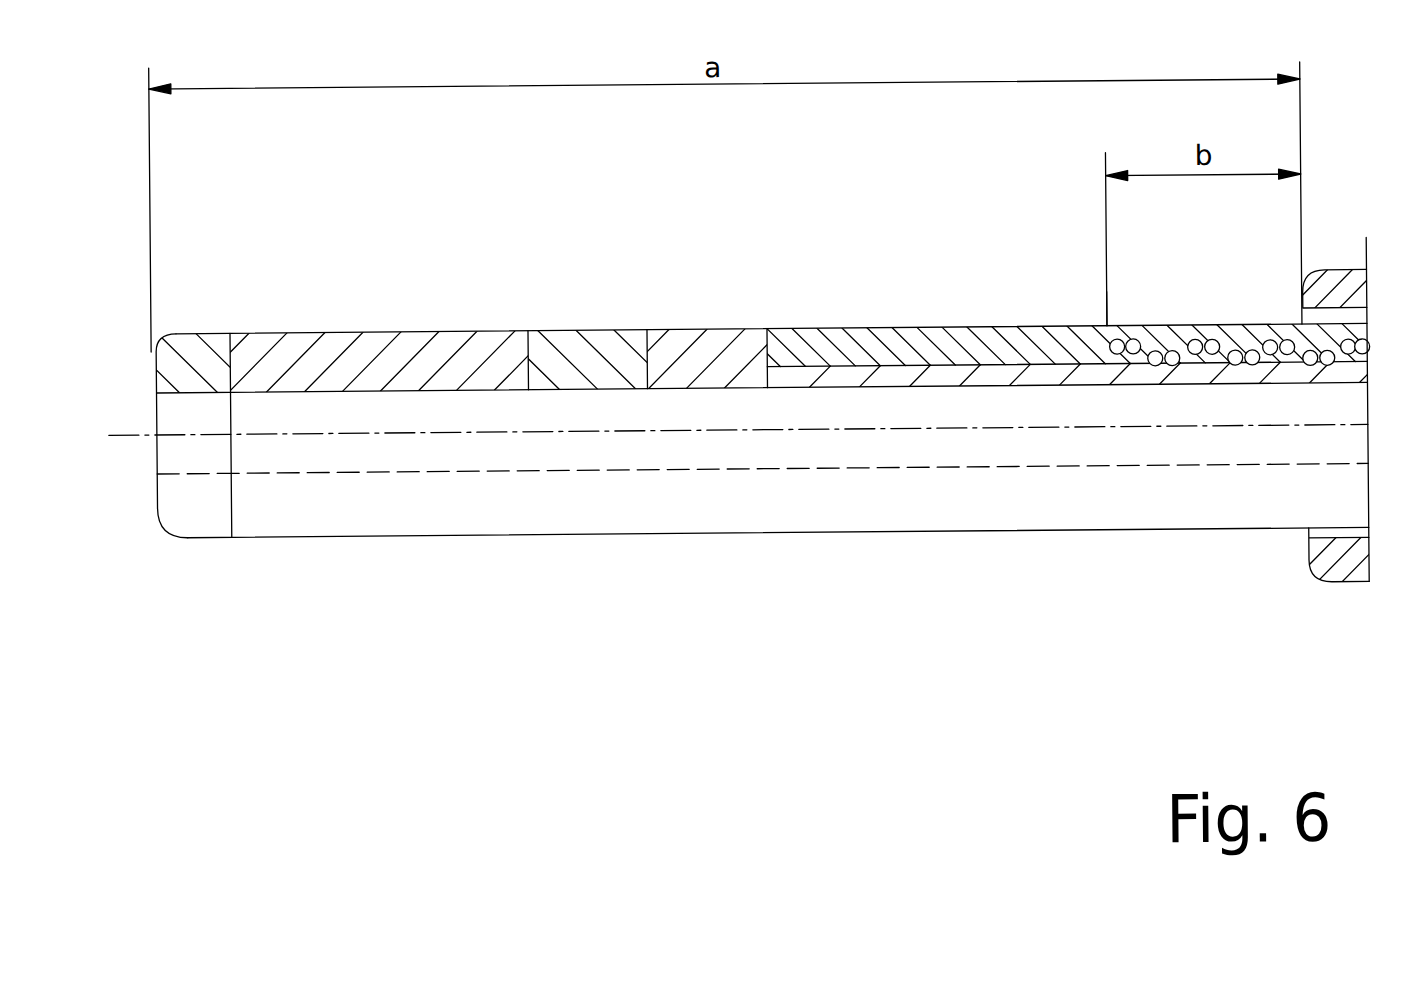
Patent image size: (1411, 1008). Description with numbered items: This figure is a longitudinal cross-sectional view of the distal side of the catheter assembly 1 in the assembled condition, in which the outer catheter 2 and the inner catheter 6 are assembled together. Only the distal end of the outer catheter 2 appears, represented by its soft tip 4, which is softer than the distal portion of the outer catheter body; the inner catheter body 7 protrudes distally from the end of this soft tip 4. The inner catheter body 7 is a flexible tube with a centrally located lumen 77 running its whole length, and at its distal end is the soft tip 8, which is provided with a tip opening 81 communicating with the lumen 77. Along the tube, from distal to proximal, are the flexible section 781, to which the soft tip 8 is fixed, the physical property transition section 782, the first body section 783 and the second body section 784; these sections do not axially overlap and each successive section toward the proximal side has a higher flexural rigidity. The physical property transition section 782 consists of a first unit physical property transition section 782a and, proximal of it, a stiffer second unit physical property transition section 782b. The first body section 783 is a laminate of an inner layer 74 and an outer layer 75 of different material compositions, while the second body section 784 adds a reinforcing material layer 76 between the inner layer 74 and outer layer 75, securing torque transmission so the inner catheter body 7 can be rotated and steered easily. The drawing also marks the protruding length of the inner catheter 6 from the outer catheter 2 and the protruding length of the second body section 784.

The catheter assembly 1 is at (936, 676).
The outer catheter 2 is at (1353, 619).
The soft tip 4 is at (1322, 580).
The inner catheter 6 is at (1078, 581).
The inner catheter body 7 is at (1133, 550).
The soft tip 8 is at (192, 362).
The tip opening 81 is at (173, 417).
The inner layer 74 is at (1035, 385).
The outer layer 75 is at (985, 352).
The reinforcing material layer 76 is at (1278, 386).
The lumen 77 is at (510, 411).
The flexible section 781 is at (228, 308).
The physical property transition section 782 is at (765, 214).
The first unit physical property transition section 782a is at (528, 308).
The second unit physical property transition section 782b is at (647, 308).
The first body section 783 is at (767, 308).
The second body section 784 is at (1107, 308).